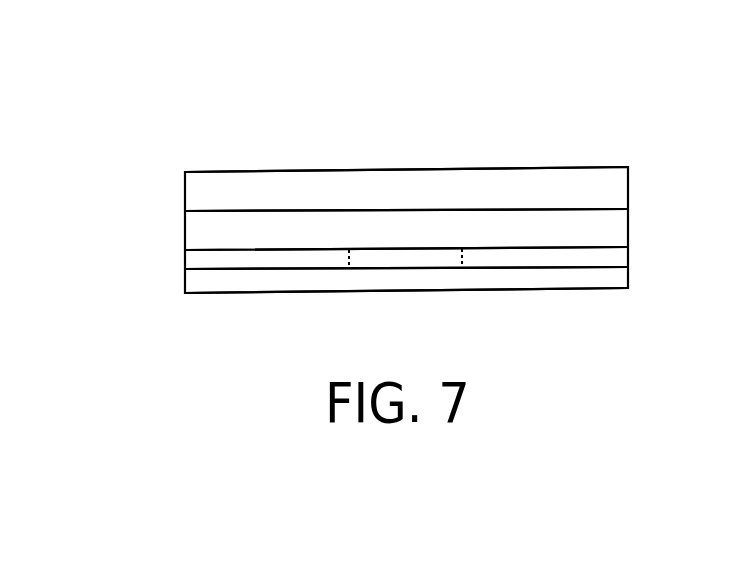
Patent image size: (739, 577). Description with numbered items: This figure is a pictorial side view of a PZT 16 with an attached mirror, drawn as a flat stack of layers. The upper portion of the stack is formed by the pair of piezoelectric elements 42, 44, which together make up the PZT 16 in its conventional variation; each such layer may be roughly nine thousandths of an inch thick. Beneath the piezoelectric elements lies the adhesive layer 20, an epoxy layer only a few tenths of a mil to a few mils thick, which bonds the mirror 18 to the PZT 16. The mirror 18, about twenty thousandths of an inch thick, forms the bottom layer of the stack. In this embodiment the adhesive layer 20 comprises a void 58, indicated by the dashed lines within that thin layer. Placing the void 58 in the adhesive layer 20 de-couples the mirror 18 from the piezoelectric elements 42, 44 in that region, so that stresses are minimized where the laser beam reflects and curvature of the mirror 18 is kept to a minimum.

The PZT 16 is at (152, 106).
The piezoelectric element 42 is at (185, 193).
The piezoelectric element 44 is at (185, 233).
The adhesive layer 20 is at (185, 260).
The mirror 18 is at (185, 283).
The void 58 is at (383, 249).